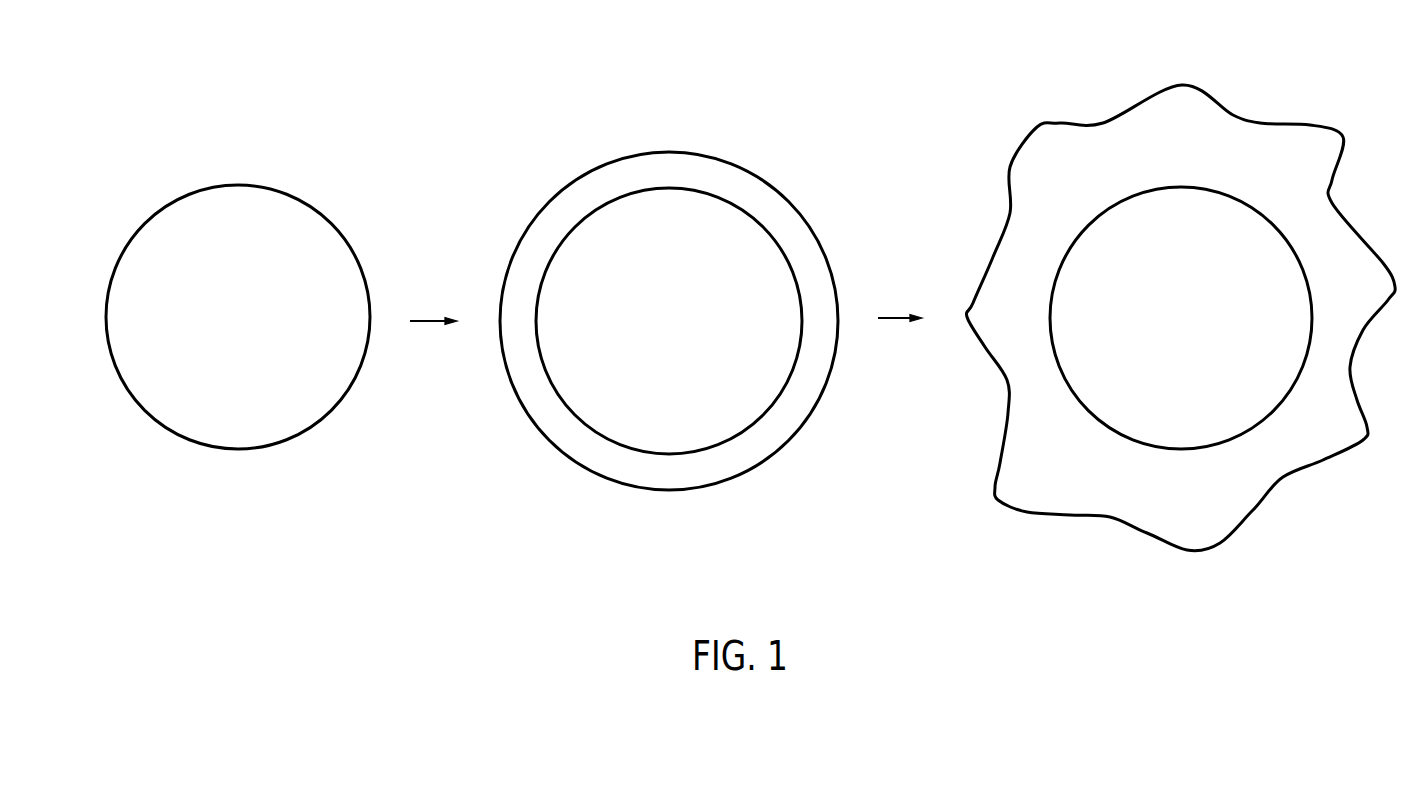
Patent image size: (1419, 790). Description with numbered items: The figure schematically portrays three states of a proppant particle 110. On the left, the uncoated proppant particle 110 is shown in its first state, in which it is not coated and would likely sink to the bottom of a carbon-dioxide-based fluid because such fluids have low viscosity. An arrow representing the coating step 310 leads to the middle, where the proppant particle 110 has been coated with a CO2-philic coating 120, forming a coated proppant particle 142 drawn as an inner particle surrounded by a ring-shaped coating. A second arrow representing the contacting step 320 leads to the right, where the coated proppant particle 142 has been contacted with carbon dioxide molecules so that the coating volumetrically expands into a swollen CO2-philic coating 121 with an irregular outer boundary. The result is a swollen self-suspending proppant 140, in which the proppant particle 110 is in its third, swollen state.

The proppant particle 110 is at (1195, 158).
The CO2-philic coating 120 is at (745, 167).
The swollen CO2-philic coating 121 is at (1260, 124).
The swollen self-suspending proppant 140 is at (1180, 357).
The coated proppant particle 142 is at (669, 363).
The coating step 310 is at (427, 321).
The contacting step 320 is at (890, 318).